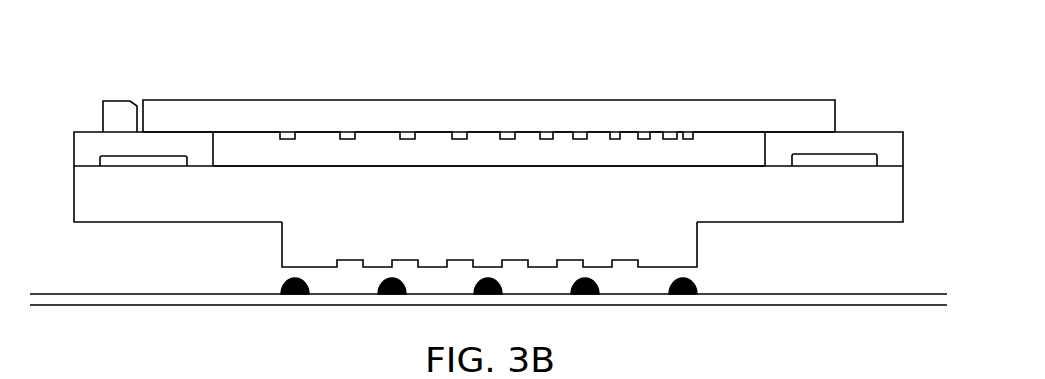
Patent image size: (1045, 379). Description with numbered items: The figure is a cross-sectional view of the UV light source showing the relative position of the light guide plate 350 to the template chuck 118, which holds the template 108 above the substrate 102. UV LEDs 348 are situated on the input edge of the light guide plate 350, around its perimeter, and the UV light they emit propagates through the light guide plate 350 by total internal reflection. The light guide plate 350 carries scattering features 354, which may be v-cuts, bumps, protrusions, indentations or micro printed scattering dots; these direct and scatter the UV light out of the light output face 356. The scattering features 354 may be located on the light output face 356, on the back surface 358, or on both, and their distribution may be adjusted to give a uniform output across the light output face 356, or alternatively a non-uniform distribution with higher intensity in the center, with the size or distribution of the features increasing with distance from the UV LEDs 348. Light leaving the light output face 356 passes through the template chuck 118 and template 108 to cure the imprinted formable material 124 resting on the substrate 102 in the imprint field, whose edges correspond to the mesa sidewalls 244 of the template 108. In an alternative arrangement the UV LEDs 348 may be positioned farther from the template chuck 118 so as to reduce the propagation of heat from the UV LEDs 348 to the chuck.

The substrate 102 is at (127, 293).
The template 108 is at (143, 203).
The template chuck 118 is at (865, 132).
The formable material 124 is at (285, 296).
The mesa sidewalls 244 is at (697, 240).
The UV LED 348 is at (125, 99).
The light guide plate 350 is at (328, 125).
The scattering features 354 is at (585, 132).
The light output face 356 is at (568, 135).
The back surface 358 is at (423, 100).